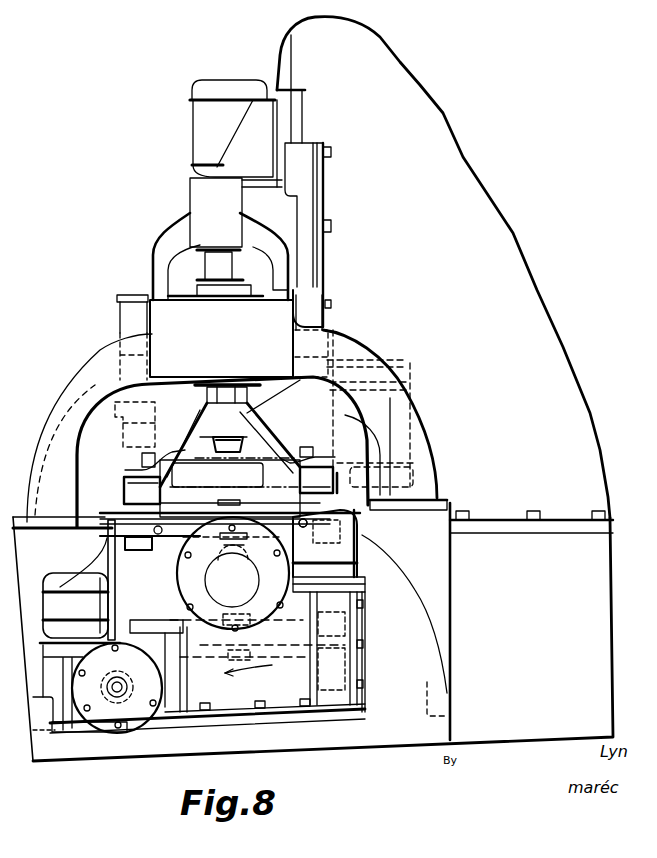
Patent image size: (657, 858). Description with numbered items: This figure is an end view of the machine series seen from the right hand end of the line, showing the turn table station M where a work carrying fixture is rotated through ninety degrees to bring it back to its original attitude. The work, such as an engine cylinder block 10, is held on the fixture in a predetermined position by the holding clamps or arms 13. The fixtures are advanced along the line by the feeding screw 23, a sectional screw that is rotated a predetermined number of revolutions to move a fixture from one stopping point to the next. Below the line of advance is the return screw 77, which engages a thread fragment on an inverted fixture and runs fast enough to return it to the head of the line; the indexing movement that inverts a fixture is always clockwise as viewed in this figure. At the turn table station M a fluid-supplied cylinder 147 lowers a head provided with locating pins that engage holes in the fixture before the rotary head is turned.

The cylinder 147 is at (236, 163).
The turn table station M is at (313, 389).
The engine cylinder block 10 is at (247, 457).
The holding clamps or arms 13 is at (132, 467).
The feeding screw 23 is at (177, 571).
The return screw 77 is at (115, 697).